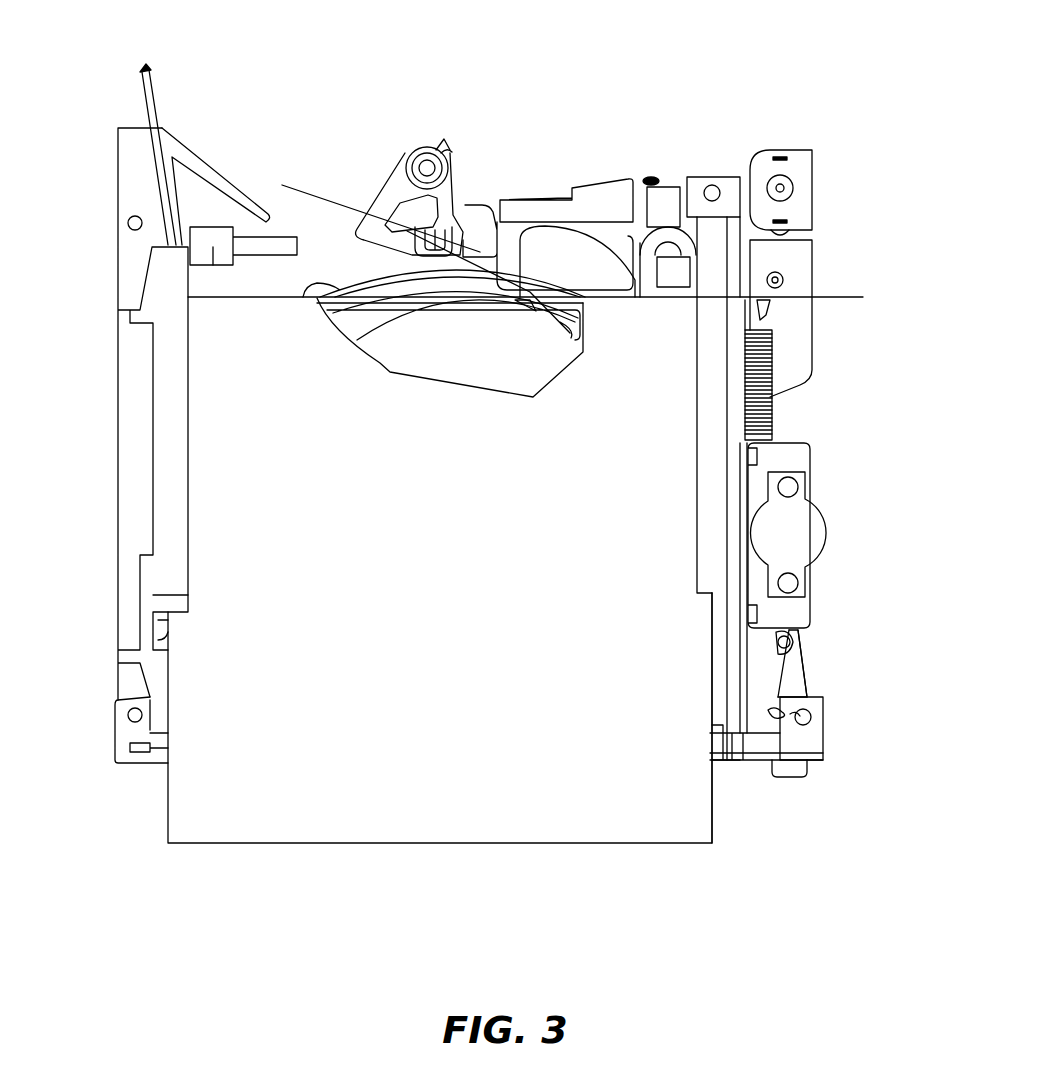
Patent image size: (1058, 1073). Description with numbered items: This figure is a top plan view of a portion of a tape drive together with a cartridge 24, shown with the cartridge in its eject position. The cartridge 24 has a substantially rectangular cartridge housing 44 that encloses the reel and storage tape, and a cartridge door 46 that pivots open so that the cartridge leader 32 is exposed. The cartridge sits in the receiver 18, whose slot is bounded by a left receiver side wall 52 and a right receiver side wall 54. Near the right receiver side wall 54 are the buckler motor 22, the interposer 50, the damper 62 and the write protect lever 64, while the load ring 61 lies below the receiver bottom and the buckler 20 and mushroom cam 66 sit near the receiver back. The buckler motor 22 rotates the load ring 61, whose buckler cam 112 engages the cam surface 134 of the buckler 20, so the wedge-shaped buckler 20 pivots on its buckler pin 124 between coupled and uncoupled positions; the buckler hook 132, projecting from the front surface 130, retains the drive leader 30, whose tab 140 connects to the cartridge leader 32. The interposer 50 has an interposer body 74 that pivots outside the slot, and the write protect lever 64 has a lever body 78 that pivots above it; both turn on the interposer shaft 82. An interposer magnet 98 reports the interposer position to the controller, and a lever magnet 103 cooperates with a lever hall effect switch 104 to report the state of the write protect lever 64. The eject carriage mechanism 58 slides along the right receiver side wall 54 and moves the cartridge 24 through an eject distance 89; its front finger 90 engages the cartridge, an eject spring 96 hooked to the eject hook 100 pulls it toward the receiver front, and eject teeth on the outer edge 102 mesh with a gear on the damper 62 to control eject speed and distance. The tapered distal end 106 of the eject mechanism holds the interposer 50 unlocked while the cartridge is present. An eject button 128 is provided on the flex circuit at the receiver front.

The receiver 18 is at (118, 512).
The buckler 20 is at (425, 147).
The buckler motor 22 is at (812, 148).
The cartridge 24 is at (334, 848).
The drive leader 30 is at (340, 205).
The cartridge leader 32 is at (373, 362).
The cartridge housing 44 is at (512, 818).
The cartridge door 46 is at (140, 84).
The interposer 50 is at (807, 698).
The left receiver side wall 52 is at (167, 453).
The right receiver side wall 54 is at (752, 480).
The eject carriage mechanism 58 is at (660, 273).
The load ring 61 is at (318, 285).
The damper 62 is at (810, 520).
The write protect lever 64 is at (805, 690).
The mushroom cam 66 is at (532, 205).
The interposer body 74 is at (808, 715).
The lever body 78 is at (785, 675).
The interposer shaft 82 is at (793, 653).
The eject distance 89 is at (823, 265).
The front finger 90 is at (683, 270).
The eject spring 96 is at (772, 410).
The interposer magnet 98 is at (805, 733).
The eject hook 100 is at (763, 300).
The outer edge 102 is at (787, 630).
The lever magnet 103 is at (795, 762).
The lever hall effect switch 104 is at (723, 767).
The tapered distal end 106 is at (750, 763).
The buckler cam 112 is at (573, 253).
The buckler pin 124 is at (452, 150).
The eject button 128 is at (800, 777).
The front surface 130 is at (375, 200).
The buckler hook 132 is at (353, 227).
The cam surface 134 is at (410, 258).
The tab 140 is at (490, 230).